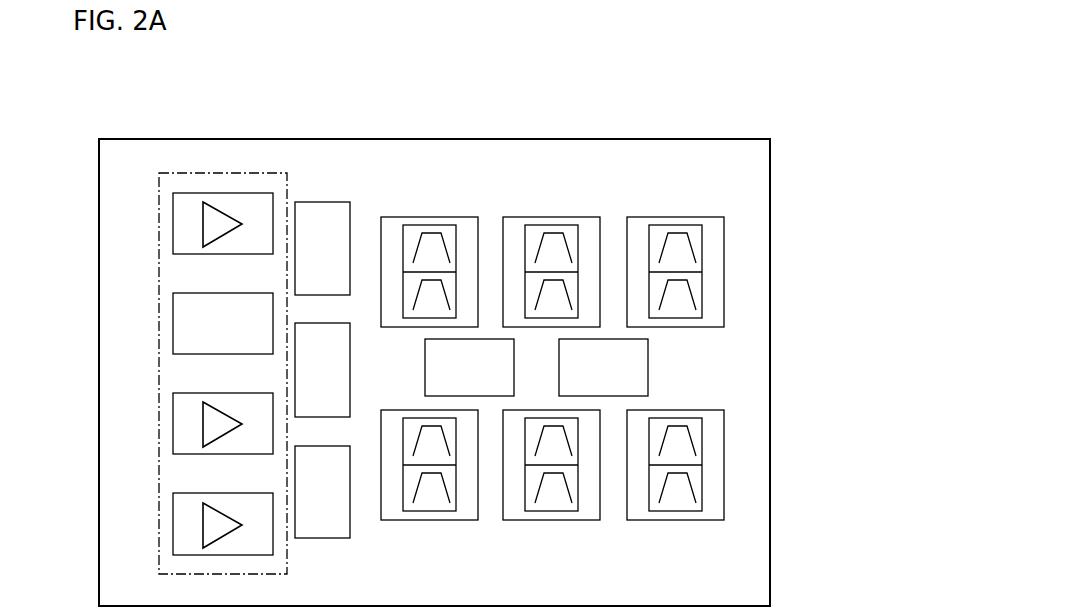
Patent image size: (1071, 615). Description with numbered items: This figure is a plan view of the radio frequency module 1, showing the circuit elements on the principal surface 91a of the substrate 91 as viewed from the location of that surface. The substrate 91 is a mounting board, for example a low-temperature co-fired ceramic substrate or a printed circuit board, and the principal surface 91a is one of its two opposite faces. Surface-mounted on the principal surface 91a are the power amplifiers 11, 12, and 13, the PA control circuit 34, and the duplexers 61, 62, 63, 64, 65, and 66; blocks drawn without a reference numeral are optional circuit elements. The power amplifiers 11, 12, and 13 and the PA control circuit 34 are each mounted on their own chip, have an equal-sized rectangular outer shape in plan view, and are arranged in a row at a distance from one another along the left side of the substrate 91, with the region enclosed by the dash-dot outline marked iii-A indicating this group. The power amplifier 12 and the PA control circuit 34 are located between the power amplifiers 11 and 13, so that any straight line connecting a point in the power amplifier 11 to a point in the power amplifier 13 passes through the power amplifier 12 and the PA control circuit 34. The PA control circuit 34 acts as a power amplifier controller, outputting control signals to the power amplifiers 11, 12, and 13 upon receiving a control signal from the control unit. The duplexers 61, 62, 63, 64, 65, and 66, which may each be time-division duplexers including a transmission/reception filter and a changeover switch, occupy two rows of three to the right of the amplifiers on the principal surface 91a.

The radio frequency module 1 is at (715, 102).
The substrate 91 is at (437, 140).
The principal surface 91a is at (762, 171).
The cross-section region iii-A is at (227, 173).
The power amplifier 11 is at (173, 210).
The power amplifier 12 is at (173, 407).
The power amplifier 13 is at (173, 509).
The PA control circuit 34 is at (173, 307).
The duplexer 61 is at (442, 217).
The duplexer 62 is at (564, 217).
The duplexer 63 is at (686, 217).
The duplexer 64 is at (440, 521).
The duplexer 65 is at (562, 521).
The duplexer 66 is at (683, 521).